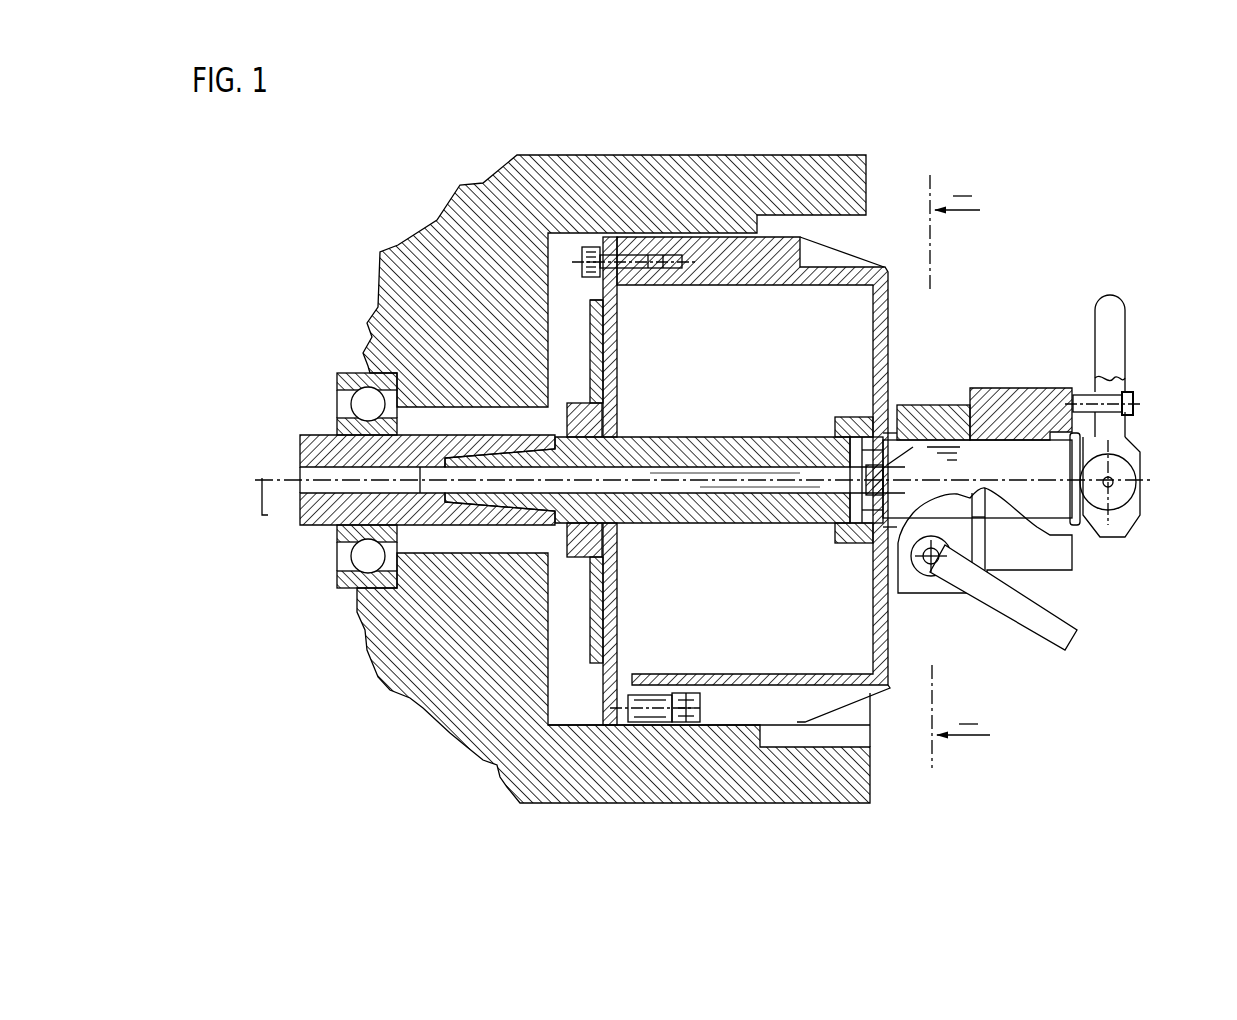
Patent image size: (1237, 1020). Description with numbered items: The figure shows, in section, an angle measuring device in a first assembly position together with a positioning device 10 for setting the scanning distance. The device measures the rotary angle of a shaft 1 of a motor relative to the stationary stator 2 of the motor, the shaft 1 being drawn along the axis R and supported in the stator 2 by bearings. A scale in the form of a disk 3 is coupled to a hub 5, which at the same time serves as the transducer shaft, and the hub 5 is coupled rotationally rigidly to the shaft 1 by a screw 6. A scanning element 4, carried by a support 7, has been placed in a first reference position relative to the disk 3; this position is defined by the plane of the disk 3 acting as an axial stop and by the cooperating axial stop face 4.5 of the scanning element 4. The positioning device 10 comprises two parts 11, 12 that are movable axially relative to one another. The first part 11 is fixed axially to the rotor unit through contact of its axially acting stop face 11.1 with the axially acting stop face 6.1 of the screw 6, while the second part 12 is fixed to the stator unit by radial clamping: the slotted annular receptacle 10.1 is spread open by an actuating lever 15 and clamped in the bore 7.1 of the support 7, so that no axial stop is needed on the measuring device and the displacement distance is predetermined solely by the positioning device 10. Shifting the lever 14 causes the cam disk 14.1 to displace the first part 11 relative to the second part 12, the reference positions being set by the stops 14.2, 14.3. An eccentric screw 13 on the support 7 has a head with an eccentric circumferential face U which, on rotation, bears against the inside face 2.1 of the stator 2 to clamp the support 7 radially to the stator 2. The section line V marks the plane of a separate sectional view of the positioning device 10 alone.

The shaft 1 is at (300, 433).
The stator 2 is at (388, 265).
The inside face 2.1 is at (577, 725).
The disk 3 is at (590, 378).
The scanning element 4 is at (605, 620).
The axial stop face 4.5 is at (590, 290).
The hub 5 is at (647, 437).
The screw 6 is at (691, 449).
The axially acting stop face 6.1 is at (910, 405).
The support 7 is at (781, 280).
The bore 7.1 is at (834, 528).
The positioning device 10 is at (1008, 303).
The annular receptacle 10.1 is at (858, 545).
The first part 11 is at (981, 463).
The axially acting stop face 11.1 is at (847, 417).
The second part 12 is at (1040, 407).
The eccentric screw 13 is at (700, 710).
The lever 14 is at (1120, 327).
The cam disk 14.1 is at (1135, 472).
The stop 14.2 is at (1133, 405).
The stop 14.3 is at (1125, 380).
The actuator lever 15 is at (1040, 617).
The axis of rotation R is at (252, 512).
The circumferential face U is at (695, 674).
The section line V— V is at (960, 468).